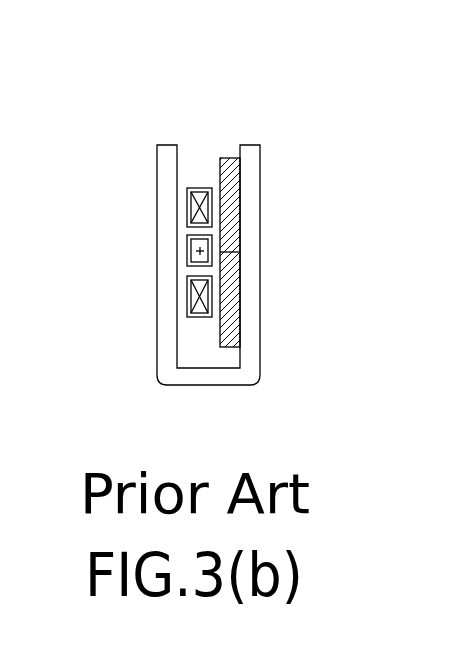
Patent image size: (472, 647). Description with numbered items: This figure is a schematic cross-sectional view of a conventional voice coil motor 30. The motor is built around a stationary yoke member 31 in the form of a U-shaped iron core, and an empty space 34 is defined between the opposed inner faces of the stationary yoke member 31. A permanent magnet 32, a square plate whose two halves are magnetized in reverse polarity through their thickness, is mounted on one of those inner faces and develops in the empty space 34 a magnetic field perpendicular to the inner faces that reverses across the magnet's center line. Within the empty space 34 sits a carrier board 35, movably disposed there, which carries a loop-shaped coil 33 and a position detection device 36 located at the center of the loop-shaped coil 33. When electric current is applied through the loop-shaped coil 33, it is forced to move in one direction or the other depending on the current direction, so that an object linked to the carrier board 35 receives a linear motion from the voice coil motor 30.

The voice coil motor 30 is at (130, 155).
The stationary yoke member 31 is at (261, 325).
The permanent magnet 32 is at (225, 157).
The loop-shaped coil 33 is at (200, 187).
The empty space 34 is at (202, 138).
The carrier board 35 is at (187, 290).
The position detection device 36 is at (187, 240).